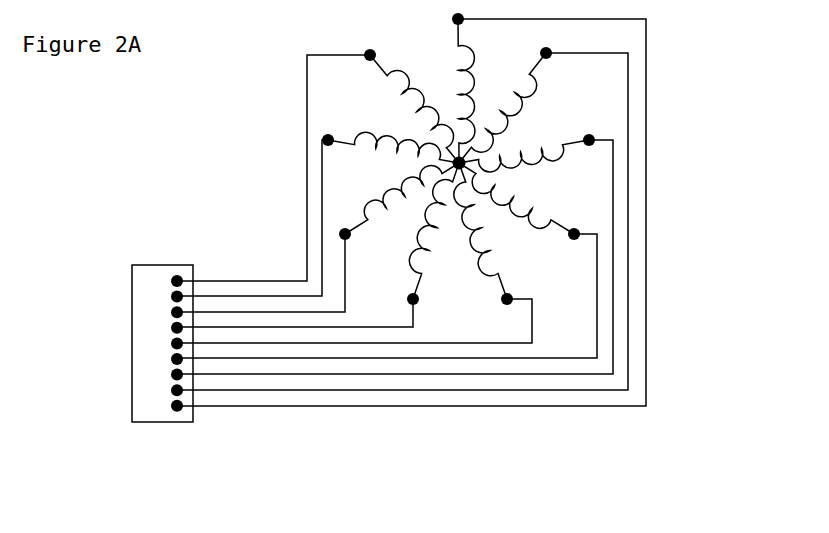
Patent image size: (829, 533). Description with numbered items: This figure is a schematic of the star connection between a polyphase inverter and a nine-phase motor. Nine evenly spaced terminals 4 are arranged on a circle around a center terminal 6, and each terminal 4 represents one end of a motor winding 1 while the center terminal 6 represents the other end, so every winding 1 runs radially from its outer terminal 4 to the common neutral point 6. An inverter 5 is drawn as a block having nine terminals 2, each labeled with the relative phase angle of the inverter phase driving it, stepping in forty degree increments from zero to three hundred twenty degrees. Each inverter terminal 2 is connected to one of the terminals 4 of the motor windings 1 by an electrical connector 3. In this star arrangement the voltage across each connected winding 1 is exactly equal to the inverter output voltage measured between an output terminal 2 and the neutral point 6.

The motor winding 1 is at (553, 148).
The inverter terminal 2 is at (130, 274).
The electrical connector 3 is at (646, 342).
The terminal 4 is at (547, 53).
The inverter 5 is at (194, 424).
The center terminal 6 is at (459, 163).